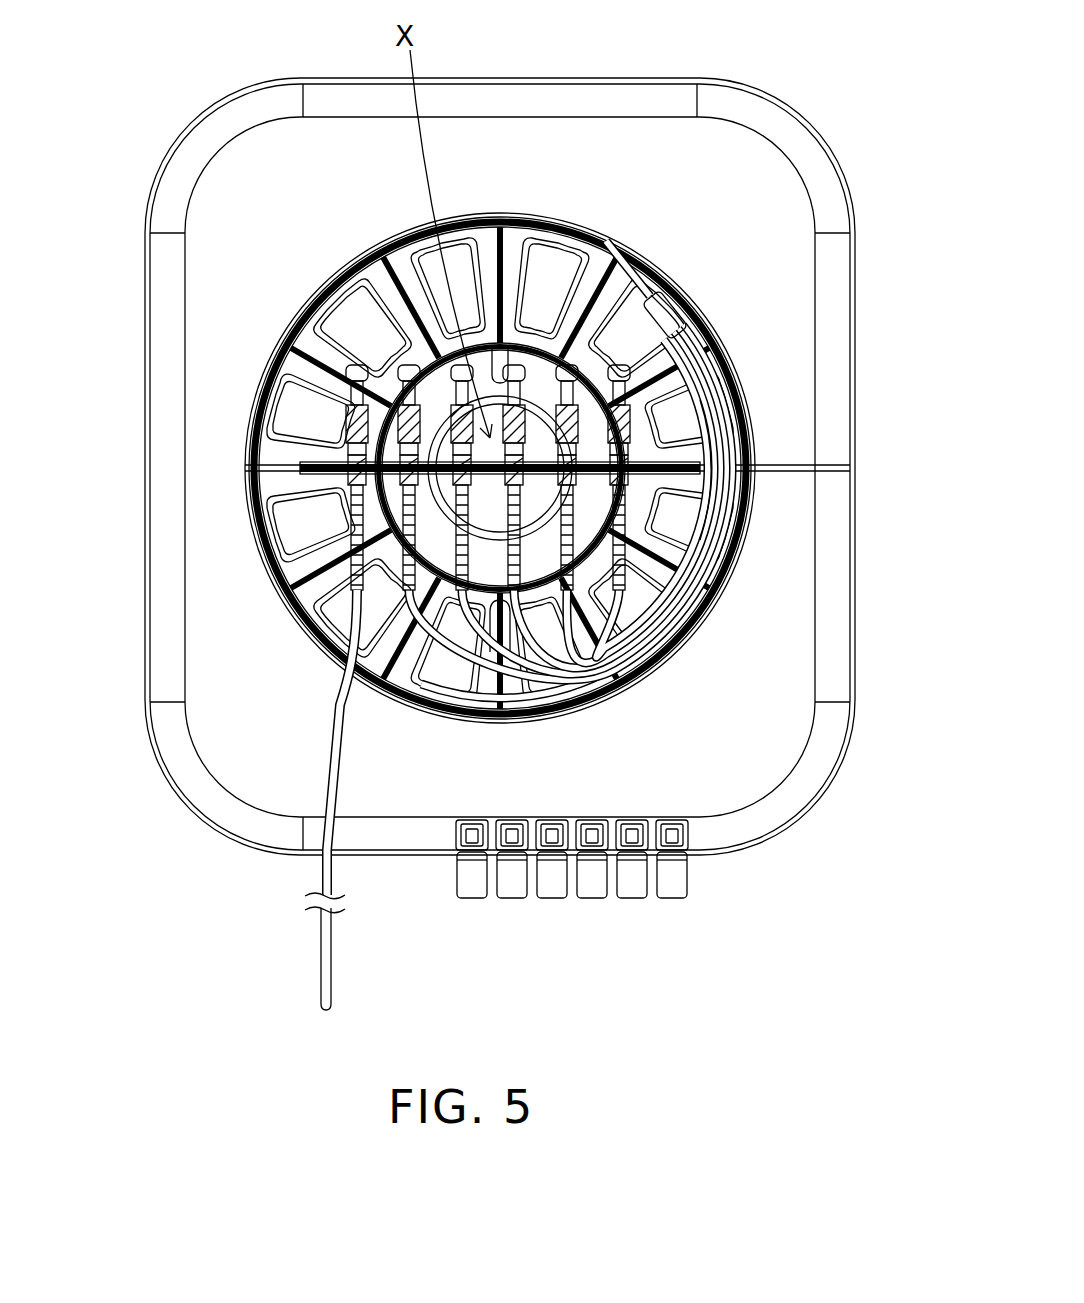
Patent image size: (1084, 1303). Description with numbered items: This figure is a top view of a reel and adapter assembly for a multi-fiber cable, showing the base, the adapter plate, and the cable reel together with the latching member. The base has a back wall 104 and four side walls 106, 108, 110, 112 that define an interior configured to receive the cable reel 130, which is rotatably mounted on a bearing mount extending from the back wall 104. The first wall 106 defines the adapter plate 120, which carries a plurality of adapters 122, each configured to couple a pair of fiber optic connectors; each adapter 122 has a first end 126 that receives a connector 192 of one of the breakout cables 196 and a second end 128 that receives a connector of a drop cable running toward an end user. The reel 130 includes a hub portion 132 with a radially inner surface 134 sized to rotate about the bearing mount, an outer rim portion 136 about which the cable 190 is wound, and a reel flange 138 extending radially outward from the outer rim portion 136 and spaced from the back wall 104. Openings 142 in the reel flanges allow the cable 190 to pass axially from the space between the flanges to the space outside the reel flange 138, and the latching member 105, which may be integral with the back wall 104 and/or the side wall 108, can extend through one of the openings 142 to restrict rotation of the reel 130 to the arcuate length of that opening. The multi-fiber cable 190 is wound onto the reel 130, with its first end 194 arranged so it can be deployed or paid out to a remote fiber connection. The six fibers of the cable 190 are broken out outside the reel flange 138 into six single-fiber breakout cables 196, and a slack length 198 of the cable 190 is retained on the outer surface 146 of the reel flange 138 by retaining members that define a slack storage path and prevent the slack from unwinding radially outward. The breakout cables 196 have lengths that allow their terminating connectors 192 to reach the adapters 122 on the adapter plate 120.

The back wall 104 is at (300, 243).
The latching member 105 is at (833, 462).
The first wall 106 is at (390, 840).
The side wall 108 is at (838, 404).
The side wall 110 is at (572, 98).
The side wall 112 is at (160, 485).
The adapter plate 120 is at (447, 926).
The adapters 122 is at (590, 912).
The first end 126 is at (688, 833).
The second end 128 is at (690, 884).
The cable reel 130 is at (675, 690).
The hub portion 132 is at (660, 606).
The radially inner surface 134 is at (673, 697).
The outer rim portion 136 is at (610, 242).
The reel flange 138 is at (700, 302).
The openings 142 is at (290, 410).
The outer surface 146 is at (300, 567).
The multi-fiber cable 190 is at (330, 740).
The connectors 192 is at (640, 405).
The first end 194 is at (320, 945).
The breakout cables 196 is at (742, 522).
The slack length 198 is at (357, 267).